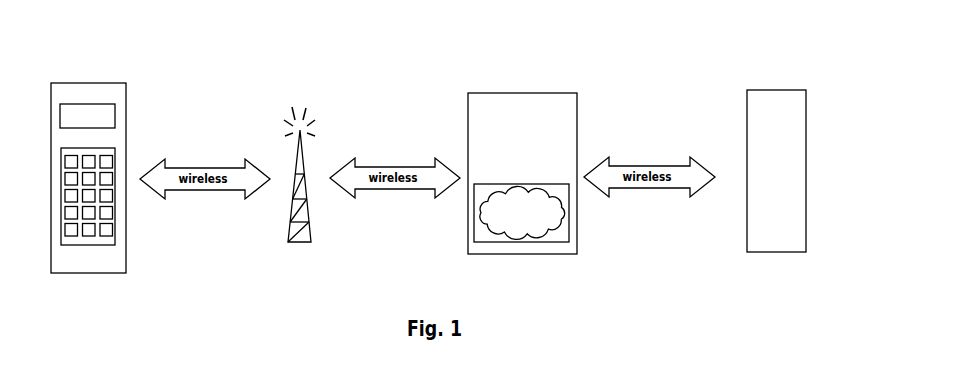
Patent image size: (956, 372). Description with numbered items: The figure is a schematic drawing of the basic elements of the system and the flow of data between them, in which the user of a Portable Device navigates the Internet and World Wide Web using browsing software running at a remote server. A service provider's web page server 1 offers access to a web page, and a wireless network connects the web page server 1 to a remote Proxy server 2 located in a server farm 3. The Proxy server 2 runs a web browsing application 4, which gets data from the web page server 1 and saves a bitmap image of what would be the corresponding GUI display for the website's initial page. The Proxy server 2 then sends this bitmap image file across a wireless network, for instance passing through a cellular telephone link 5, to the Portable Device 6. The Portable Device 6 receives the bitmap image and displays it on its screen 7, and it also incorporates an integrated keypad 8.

The web page server 1 is at (777, 99).
The Proxy server 2 is at (561, 237).
The server farm 3 is at (526, 100).
The web browsing application 4 is at (483, 223).
The cellular telephone link 5 is at (309, 102).
The Portable Device 6 is at (106, 94).
The screen 7 is at (73, 113).
The integrated keypad 8 is at (100, 218).